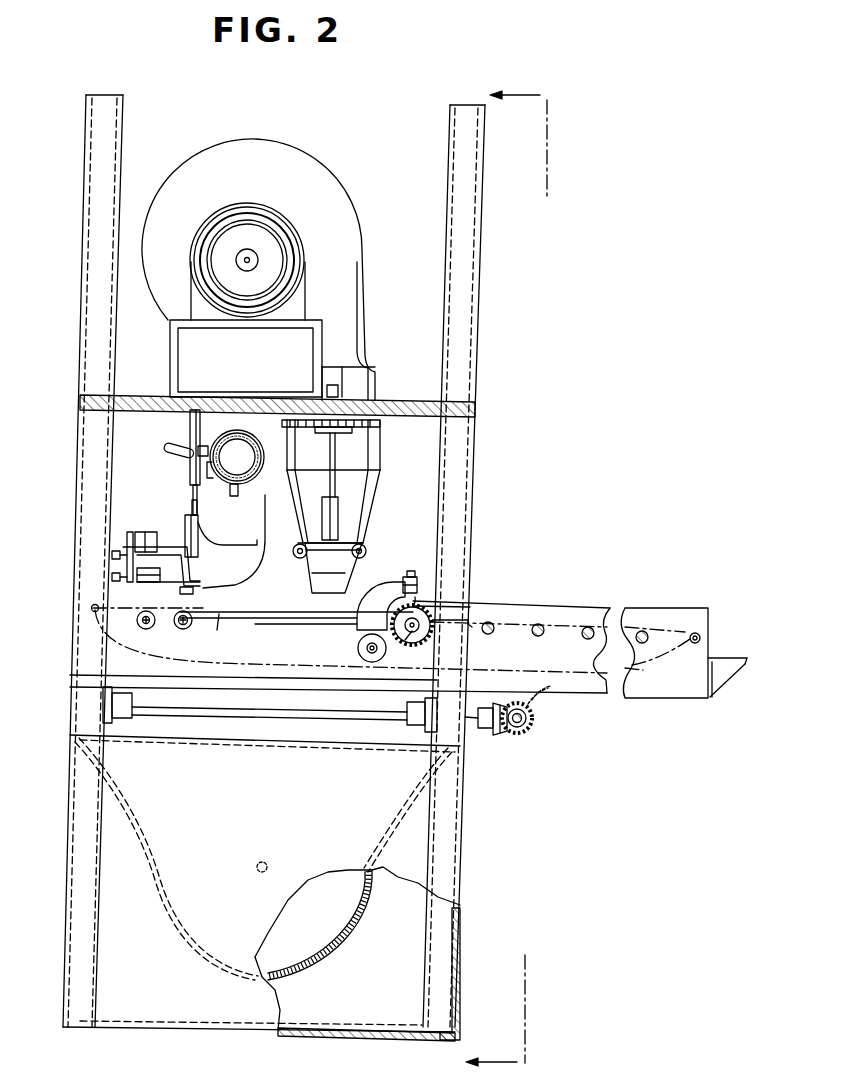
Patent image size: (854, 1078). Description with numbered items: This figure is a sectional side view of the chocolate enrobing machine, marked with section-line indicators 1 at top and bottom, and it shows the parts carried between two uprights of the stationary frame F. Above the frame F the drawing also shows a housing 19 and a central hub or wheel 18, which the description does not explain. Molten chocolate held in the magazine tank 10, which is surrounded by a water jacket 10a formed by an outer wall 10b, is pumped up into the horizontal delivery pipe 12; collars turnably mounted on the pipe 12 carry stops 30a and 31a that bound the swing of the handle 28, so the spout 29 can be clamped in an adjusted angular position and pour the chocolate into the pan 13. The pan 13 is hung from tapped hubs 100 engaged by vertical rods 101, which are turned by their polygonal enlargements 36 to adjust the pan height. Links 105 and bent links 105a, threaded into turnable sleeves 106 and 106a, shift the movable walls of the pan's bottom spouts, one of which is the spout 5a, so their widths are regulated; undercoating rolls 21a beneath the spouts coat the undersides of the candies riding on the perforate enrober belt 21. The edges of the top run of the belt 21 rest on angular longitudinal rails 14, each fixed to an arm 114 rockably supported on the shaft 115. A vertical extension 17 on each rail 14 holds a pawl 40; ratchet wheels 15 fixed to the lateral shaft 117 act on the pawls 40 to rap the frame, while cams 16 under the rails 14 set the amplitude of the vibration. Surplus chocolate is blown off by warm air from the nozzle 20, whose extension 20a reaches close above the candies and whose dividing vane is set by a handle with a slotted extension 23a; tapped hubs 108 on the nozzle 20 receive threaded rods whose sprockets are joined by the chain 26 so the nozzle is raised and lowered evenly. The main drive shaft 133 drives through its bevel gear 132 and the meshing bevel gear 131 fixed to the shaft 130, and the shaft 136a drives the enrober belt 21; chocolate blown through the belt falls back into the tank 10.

The section line 1 is at (515, 574).
The blower housing and duct 19 is at (273, 304).
The blower impeller hub 18 is at (295, 253).
The stationary frame F is at (277, 390).
The stop 30a is at (211, 447).
The handle 28 is at (166, 452).
The enlargement 36 is at (178, 494).
The vertical rod 101 is at (177, 508).
The hub 100 is at (173, 536).
The horizontal delivery pipe 12 is at (239, 451).
The stop 31a is at (215, 481).
The spout 29 is at (226, 505).
The pan 13 is at (242, 541).
The bent link 105a is at (179, 566).
The sleeve 106a is at (127, 546).
The sleeve 106 is at (83, 571).
The link 105 is at (145, 570).
The spout 5a is at (198, 599).
The longitudinal rail 14 is at (350, 639).
The arm 114 is at (216, 643).
The undercoating roll 21a is at (139, 635).
The shaft 115 is at (184, 641).
The cam 16 is at (359, 659).
The ratchet wheel 15 is at (412, 644).
The lateral shaft 117 is at (398, 647).
The vertical extension 17 is at (387, 590).
The pawl 40 is at (460, 598).
The enrober belt 21 is at (511, 635).
The shaft 136a is at (684, 639).
The shaft 130 is at (270, 710).
The bevel gear 131 is at (490, 735).
The bevel gear 132 is at (531, 732).
The main drive shaft 133 is at (559, 705).
The endless horizontal chain 26 is at (348, 433).
The nozzle 20 is at (343, 531).
The hub 108 is at (365, 486).
The slotted extension 23a is at (349, 548).
The extension 20a is at (346, 574).
The magazine tank 10 is at (357, 948).
The water jacket 10a is at (402, 929).
The outer wall 10b is at (392, 974).